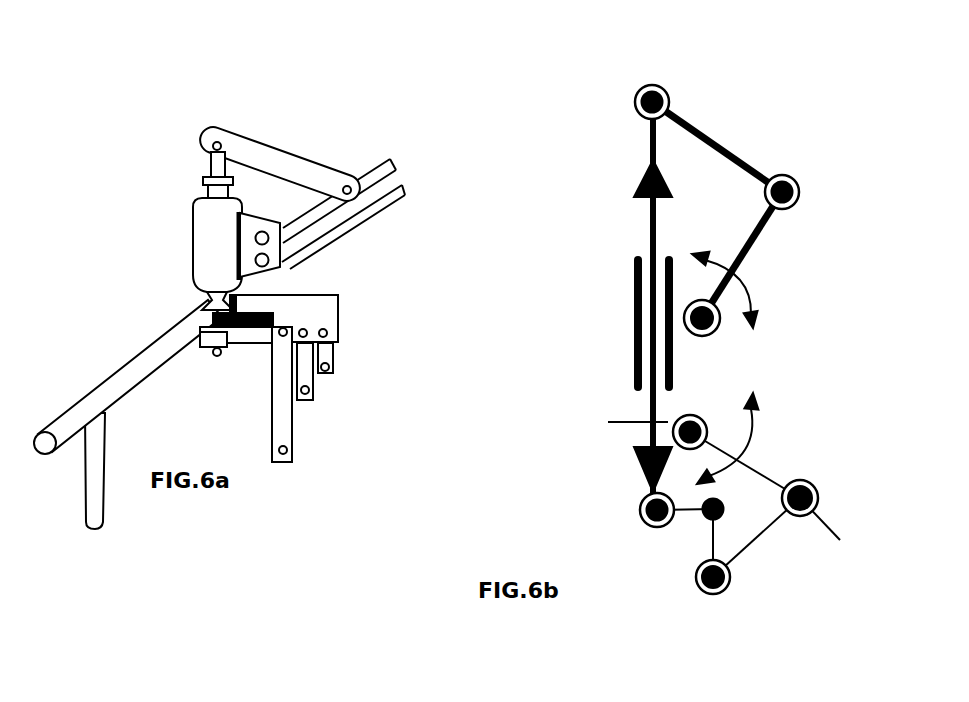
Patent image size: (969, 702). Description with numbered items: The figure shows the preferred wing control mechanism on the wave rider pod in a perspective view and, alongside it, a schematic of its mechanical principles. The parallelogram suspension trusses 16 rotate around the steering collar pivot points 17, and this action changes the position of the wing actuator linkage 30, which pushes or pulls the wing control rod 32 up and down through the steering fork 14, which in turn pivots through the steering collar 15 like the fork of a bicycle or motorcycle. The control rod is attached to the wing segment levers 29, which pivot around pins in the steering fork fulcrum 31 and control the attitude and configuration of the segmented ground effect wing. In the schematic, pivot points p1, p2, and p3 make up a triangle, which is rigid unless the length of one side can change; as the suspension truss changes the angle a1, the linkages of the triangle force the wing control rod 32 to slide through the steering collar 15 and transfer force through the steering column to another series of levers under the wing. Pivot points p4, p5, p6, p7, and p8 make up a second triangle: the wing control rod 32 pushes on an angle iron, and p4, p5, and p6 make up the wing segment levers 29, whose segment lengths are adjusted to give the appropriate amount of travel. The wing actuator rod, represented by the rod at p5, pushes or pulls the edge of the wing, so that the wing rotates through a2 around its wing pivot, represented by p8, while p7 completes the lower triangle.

In FIG. 6a, the steering fork 14 is at (178, 322).
In FIG. 6a, the steering collar 15 is at (200, 255).
In FIG. 6b, the steering collar 15 is at (630, 347).
In FIG. 6a, the parallelogram suspension trusses 16 is at (408, 186).
In FIG. 6a, the steering collar pivot points 17 is at (300, 253).
In FIG. 6a, the wing segment levers 29 is at (333, 370).
In FIG. 6a, the wing actuator linkage 30 is at (200, 143).
In FIG. 6a, the steering fork fulcrum 31 is at (340, 320).
In FIG. 6a, the wing control rod 32 is at (205, 163).
In FIG. 6b, the wing control rod 32 is at (647, 238).
In FIG. 6b, the pivot point p1 is at (720, 326).
In FIG. 6b, the pivot point p2 is at (800, 172).
In FIG. 6b, the pivot point p3 is at (668, 83).
In FIG. 6b, the pivot point p4 is at (637, 497).
In FIG. 6b, the pivot point p5 is at (703, 525).
In FIG. 6b, the pivot point p6 is at (742, 577).
In FIG. 6b, the pivot point p7 is at (810, 472).
In FIG. 6b, the pivot point p8 is at (697, 405).
In FIG. 6b, the angle a1 is at (752, 282).
In FIG. 6b, the rotation angle a2 is at (740, 445).